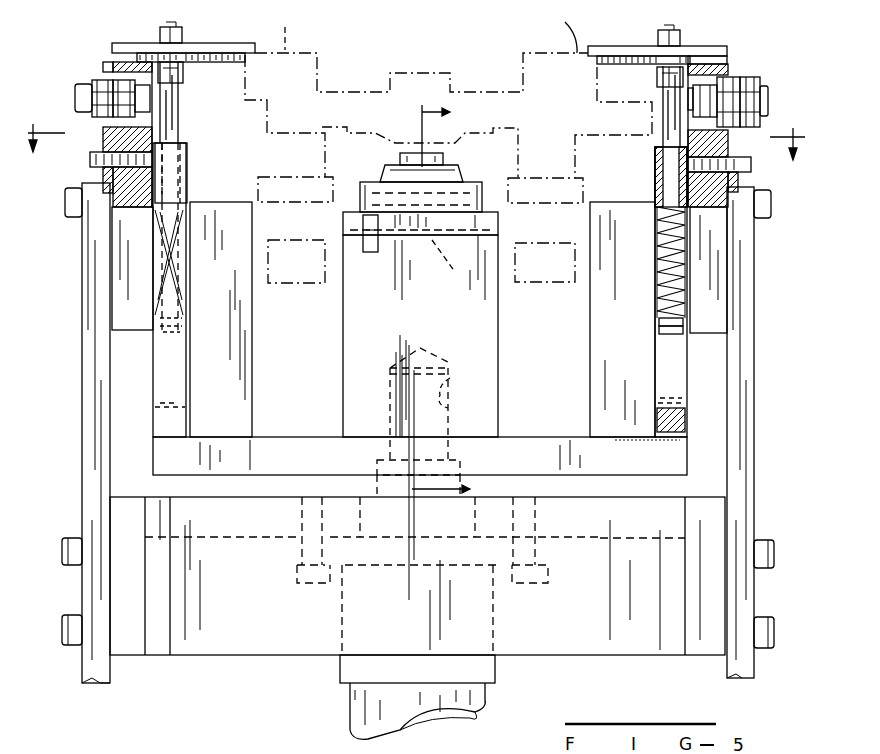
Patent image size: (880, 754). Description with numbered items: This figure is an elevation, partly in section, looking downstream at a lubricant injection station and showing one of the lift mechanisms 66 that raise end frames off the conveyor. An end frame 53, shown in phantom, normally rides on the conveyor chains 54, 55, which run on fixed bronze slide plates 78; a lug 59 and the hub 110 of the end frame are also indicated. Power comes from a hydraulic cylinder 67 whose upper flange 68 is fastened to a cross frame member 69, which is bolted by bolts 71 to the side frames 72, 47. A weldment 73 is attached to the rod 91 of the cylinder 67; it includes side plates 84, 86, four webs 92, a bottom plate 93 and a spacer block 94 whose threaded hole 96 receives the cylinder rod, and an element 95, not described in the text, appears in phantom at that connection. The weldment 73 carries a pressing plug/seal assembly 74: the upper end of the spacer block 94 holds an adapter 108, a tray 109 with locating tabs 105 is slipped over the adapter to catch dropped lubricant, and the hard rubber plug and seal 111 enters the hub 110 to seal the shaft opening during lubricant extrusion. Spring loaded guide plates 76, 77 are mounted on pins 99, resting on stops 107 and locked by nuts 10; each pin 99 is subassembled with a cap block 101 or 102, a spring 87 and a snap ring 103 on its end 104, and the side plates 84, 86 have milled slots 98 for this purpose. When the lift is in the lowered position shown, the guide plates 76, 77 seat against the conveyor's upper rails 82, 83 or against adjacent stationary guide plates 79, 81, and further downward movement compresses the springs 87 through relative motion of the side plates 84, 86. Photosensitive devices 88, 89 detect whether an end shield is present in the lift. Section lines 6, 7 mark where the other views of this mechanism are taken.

The section line 6- 6 is at (452, 302).
The section line 7- 7 is at (416, 154).
The nut 10 is at (168, 26).
The side frame 47 is at (745, 676).
The end frame 53 is at (327, 88).
The conveyor chain 54 is at (262, 150).
The conveyor chain 55 is at (570, 175).
The lug 59 is at (426, 27).
The lift mechanism 66 is at (417, 523).
The hydraulic cylinder 67 is at (348, 705).
The upper flange 68 is at (545, 570).
The cross frame member 69 is at (240, 609).
The bolts 71 is at (72, 538).
The side frame 72 is at (83, 668).
The weldment 73 is at (575, 425).
The pressing plug/seal assembly 74 is at (388, 165).
The guide plate 76 is at (638, 45).
The guide plate 77 is at (215, 43).
The slide plate 78 is at (258, 180).
The guide plate 79 is at (132, 43).
The guide plate 81 is at (700, 45).
The upper rail 82 is at (113, 66).
The upper rail 83 is at (728, 72).
The side plate 84 is at (153, 444).
The side plate 86 is at (683, 428).
The spring 87 is at (152, 258).
The photosensitive device 88 is at (762, 86).
The photosensitive device 89 is at (85, 90).
The rod 91 is at (390, 393).
The webb 92 is at (230, 313).
The bottom plate 93 is at (290, 478).
The spacer block 94 is at (408, 334).
The key 95 is at (460, 465).
The threaded hole 96 is at (448, 372).
The slot 98 is at (160, 405).
The pin 99 is at (180, 118).
The cap block 101 is at (183, 160).
The cap block 102 is at (655, 174).
The snap ring 103 is at (658, 322).
The end of pin 104 is at (660, 332).
The tabs 105 is at (370, 253).
The stop 107 is at (183, 72).
The adapter 108 is at (482, 195).
The tray 109 is at (345, 220).
The hub 110 is at (400, 142).
The plug and seal 111 is at (450, 160).